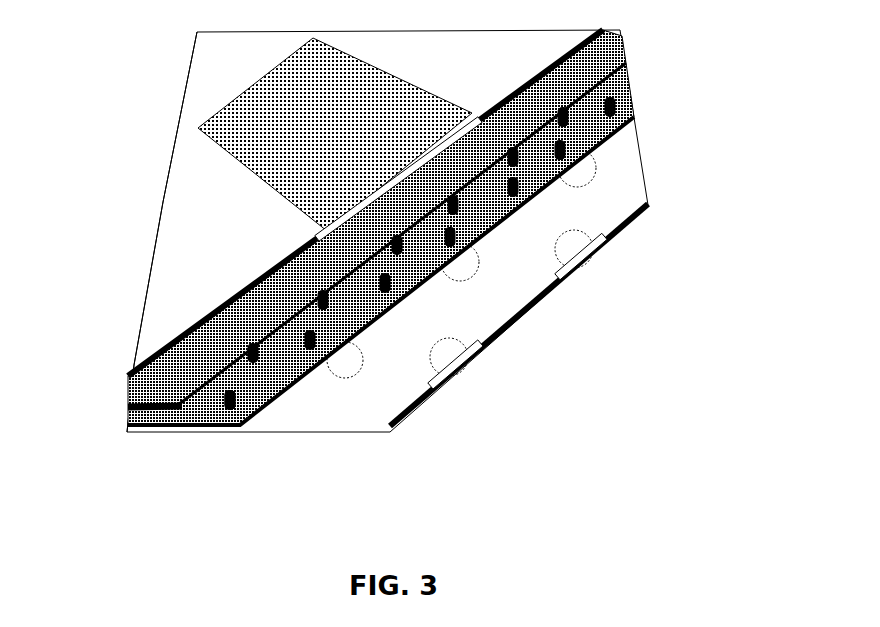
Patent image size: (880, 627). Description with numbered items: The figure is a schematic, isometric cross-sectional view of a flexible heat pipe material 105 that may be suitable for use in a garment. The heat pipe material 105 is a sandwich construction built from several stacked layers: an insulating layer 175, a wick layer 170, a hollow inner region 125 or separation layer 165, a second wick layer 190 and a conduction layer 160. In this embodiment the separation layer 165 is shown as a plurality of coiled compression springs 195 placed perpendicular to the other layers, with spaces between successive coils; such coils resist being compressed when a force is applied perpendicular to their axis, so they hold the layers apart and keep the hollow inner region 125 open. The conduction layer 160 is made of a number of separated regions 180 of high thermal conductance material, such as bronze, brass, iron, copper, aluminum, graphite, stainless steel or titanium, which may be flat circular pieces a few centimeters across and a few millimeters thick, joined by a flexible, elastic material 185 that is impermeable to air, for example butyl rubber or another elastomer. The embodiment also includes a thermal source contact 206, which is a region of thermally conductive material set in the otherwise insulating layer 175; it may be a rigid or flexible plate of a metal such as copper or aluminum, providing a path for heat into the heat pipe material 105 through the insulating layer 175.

The flexible heat pipe material 105 is at (412, 258).
The hollow inner region 125 is at (469, 237).
The conduction layer 160 is at (648, 173).
The separation layer 165 is at (612, 83).
The wick layer 170 is at (182, 357).
The insulating layer 175 is at (161, 202).
The separated regions of high thermal conductance material 180 is at (541, 315).
The flexible material 185 is at (540, 304).
The second wick layer 190 is at (127, 416).
The coiled compression springs 195 is at (222, 398).
The thermal source contact 206 is at (237, 91).